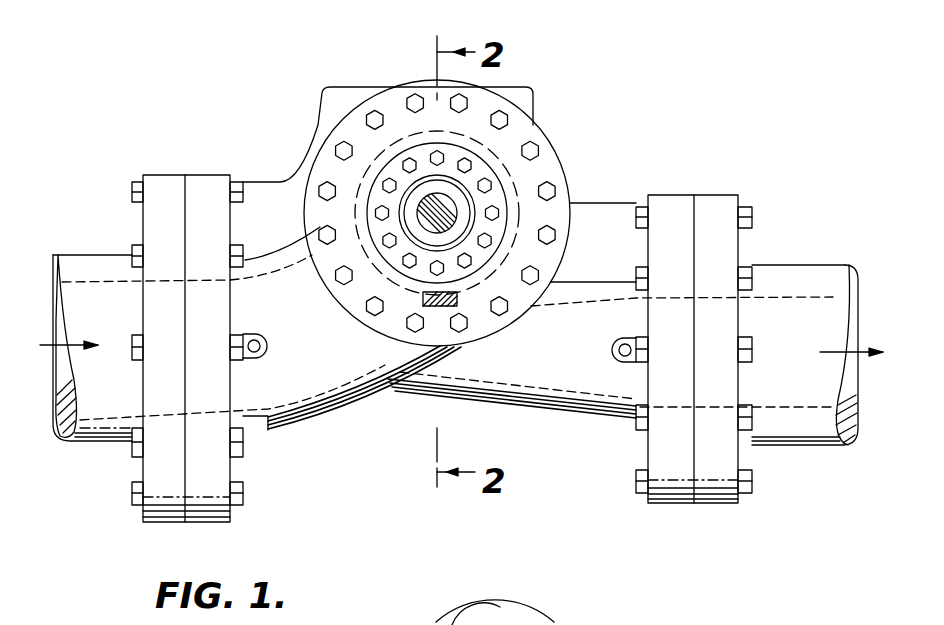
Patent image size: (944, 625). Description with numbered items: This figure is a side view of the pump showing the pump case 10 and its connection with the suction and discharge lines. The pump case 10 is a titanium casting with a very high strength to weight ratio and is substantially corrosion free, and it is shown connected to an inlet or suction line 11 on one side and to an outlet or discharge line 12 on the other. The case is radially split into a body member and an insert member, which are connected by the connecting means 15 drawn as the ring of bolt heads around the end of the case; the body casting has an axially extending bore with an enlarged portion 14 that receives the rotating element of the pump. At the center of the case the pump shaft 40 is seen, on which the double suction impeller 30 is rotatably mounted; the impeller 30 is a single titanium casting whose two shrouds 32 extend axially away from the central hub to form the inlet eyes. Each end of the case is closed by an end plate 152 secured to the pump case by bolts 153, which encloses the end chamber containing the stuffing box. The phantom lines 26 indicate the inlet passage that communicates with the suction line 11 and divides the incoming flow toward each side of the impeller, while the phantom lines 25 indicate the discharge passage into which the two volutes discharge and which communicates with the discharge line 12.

The pump case 10 is at (608, 198).
The suction line 11 is at (110, 424).
The discharge line 12 is at (815, 437).
The enlarged portion of the bore 14 is at (497, 153).
The connecting means 15 is at (347, 146).
The discharge passage 25 is at (572, 392).
The inlet passage 26 is at (316, 395).
The impeller 30 is at (531, 612).
The shrouds 32 is at (447, 617).
The pump shaft 40 is at (460, 208).
The end plate 152 is at (503, 226).
The bolts 153 is at (467, 158).